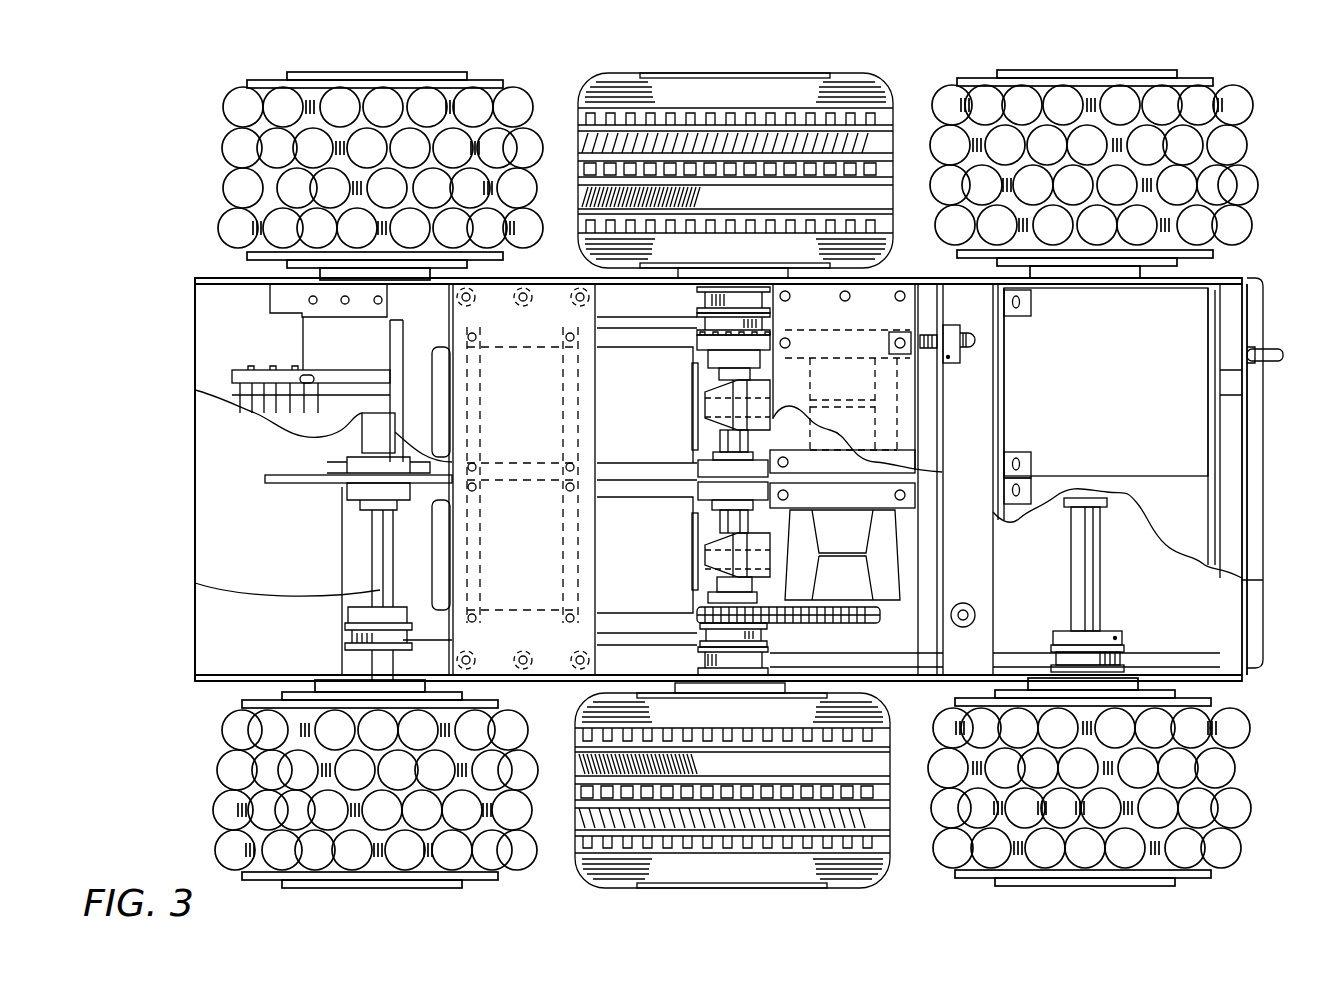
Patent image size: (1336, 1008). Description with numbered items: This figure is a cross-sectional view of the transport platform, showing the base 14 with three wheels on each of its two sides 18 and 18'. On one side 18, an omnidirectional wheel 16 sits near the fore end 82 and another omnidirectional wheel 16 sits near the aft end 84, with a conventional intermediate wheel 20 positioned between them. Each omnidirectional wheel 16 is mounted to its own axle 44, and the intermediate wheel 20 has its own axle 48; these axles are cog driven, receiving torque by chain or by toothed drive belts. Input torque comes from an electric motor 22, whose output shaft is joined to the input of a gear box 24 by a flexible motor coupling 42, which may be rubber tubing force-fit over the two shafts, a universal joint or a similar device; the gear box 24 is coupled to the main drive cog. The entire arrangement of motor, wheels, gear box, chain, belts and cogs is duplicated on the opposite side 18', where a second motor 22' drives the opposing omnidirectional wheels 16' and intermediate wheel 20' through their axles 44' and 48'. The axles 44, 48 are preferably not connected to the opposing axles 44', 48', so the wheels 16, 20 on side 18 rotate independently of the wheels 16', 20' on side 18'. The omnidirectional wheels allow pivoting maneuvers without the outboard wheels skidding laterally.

The base 14 is at (1255, 640).
The omnidirectional wheel 16 is at (732, 804).
The omnidirectional wheel 16' is at (727, 161).
The side 18 is at (746, 702).
The side 18' is at (756, 253).
The intermediate wheel 20 is at (745, 807).
The intermediate wheel 20' is at (751, 160).
The electric motor 22 is at (538, 501).
The electric motor 22' is at (619, 443).
The gear box 24 is at (843, 582).
The flexible motor coupling 42 is at (723, 558).
The axle 44 is at (735, 585).
The axle 44' is at (300, 547).
The axle 48 is at (695, 539).
The axle 48' is at (696, 409).
The fore end 82 is at (195, 345).
The aft end 84 is at (1257, 397).